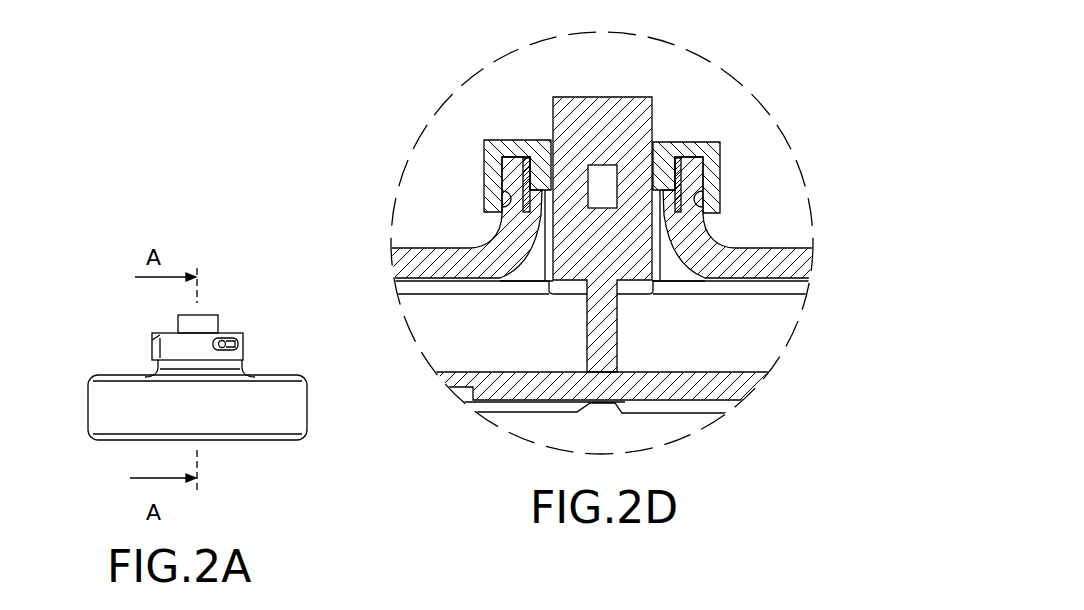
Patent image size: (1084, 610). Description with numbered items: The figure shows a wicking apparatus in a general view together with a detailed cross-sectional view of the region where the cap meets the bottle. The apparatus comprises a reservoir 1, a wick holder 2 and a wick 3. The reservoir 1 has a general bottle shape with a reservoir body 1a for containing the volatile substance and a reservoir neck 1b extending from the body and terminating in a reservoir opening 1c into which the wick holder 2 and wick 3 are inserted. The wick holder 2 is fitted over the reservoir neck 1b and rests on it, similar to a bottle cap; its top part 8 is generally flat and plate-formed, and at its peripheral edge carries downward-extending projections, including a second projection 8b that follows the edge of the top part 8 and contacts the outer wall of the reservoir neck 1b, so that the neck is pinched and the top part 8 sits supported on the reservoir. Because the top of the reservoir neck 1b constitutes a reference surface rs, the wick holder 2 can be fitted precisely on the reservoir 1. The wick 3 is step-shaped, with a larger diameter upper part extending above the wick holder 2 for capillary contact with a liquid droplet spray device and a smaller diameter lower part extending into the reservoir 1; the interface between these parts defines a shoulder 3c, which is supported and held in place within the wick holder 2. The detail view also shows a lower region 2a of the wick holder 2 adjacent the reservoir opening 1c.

In FIG. 2A, the reservoir 1 is at (118, 412).
In FIG. 2D, the reservoir body 1a is at (432, 250).
In FIG. 2D, the reservoir neck 1b is at (514, 219).
In FIG. 2D, the reservoir opening 1c is at (537, 279).
In FIG. 2A, the wick holder 2 is at (157, 347).
In FIG. 2D, the wick holder 2 is at (474, 132).
In FIG. 2D, the nut lower layer 2a is at (705, 296).
In FIG. 2A, the wick 3 is at (185, 326).
In FIG. 2D, the wick 3 is at (643, 113).
In FIG. 2D, the shoulder 3c is at (620, 210).
In FIG. 2D, the top part 8 is at (703, 148).
In FIG. 2D, the second projection 8b is at (710, 178).
In FIG. 2D, the reference surface rs is at (690, 155).